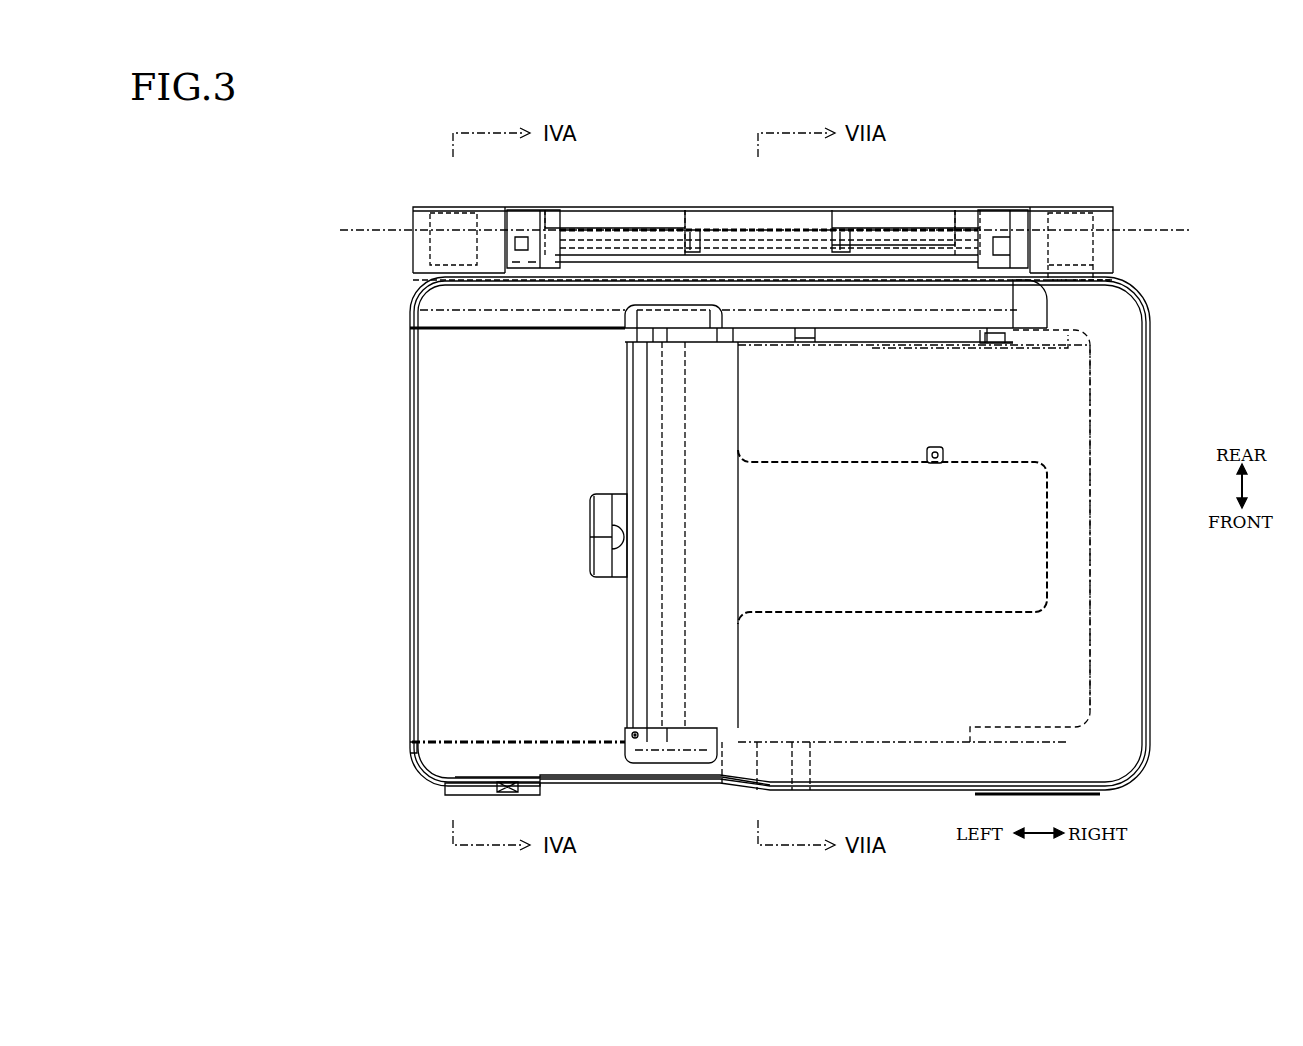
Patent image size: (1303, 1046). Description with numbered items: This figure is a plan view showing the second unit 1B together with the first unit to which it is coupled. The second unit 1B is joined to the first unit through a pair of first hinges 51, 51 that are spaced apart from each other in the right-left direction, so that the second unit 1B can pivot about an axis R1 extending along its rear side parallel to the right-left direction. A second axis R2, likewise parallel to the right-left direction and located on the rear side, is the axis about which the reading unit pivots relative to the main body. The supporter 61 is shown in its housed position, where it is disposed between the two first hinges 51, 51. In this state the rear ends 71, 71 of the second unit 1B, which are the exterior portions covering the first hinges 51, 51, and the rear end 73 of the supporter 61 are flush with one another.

The second unit 1B is at (1125, 402).
The first hinge 51 is at (430, 268).
The supporter 61 is at (640, 210).
The rear end of the second unit 71 is at (453, 207).
The rear end of the supporter 73 is at (893, 207).
The axis R1 is at (991, 231).
The axis R2 is at (532, 231).